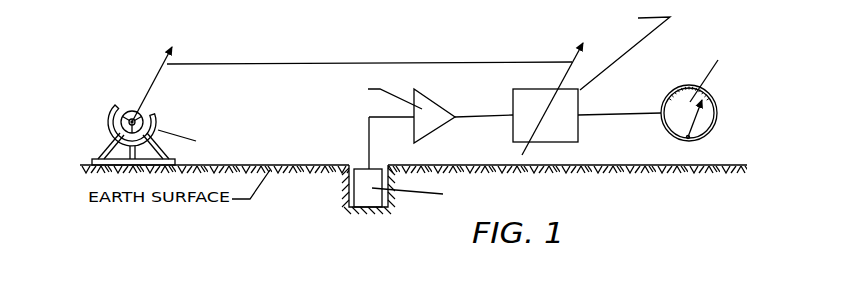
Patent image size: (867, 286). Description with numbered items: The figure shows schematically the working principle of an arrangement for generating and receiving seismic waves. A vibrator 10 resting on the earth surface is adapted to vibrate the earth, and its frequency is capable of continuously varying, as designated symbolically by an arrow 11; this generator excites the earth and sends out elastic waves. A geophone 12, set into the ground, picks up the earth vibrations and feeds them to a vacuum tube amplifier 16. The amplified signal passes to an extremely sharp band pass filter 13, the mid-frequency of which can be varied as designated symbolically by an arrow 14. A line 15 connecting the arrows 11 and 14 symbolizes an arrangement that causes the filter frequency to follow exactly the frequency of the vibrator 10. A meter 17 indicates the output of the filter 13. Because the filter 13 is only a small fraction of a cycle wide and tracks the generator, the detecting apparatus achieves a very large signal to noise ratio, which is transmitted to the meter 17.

The vibrator 10 is at (175, 134).
The arrow 11 is at (165, 84).
The geophone 12 is at (412, 171).
The band pass filter 13 is at (591, 77).
The arrow 14 is at (550, 99).
The line 15 is at (369, 52).
The vacuum tube amplifier 16 is at (395, 113).
The meter 17 is at (689, 92).